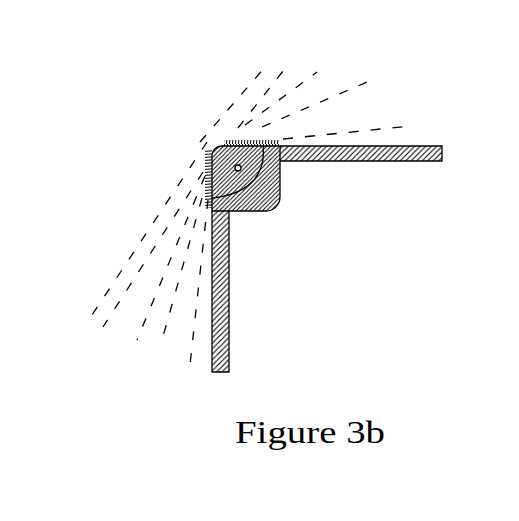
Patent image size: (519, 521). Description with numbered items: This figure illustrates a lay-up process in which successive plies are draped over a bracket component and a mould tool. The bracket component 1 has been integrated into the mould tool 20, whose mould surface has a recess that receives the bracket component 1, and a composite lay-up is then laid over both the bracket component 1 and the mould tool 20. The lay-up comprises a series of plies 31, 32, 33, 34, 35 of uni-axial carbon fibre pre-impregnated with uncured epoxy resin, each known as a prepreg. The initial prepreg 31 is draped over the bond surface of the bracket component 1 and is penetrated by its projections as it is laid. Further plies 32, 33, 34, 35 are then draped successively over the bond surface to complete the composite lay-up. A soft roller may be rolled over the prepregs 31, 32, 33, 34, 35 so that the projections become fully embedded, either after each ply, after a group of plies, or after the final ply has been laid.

The bracket component 1 is at (253, 211).
The mould tool 20 is at (294, 190).
The initial prepreg 31 is at (387, 128).
The ply 32 is at (347, 93).
The ply 33 is at (317, 72).
The ply 34 is at (288, 67).
The ply 35 is at (243, 94).